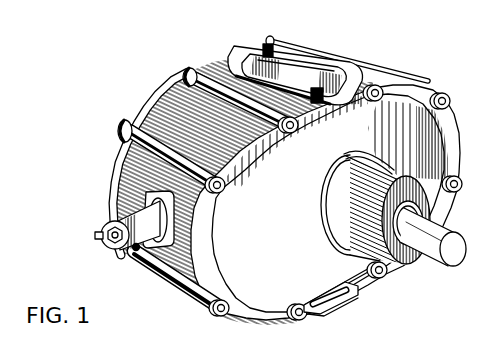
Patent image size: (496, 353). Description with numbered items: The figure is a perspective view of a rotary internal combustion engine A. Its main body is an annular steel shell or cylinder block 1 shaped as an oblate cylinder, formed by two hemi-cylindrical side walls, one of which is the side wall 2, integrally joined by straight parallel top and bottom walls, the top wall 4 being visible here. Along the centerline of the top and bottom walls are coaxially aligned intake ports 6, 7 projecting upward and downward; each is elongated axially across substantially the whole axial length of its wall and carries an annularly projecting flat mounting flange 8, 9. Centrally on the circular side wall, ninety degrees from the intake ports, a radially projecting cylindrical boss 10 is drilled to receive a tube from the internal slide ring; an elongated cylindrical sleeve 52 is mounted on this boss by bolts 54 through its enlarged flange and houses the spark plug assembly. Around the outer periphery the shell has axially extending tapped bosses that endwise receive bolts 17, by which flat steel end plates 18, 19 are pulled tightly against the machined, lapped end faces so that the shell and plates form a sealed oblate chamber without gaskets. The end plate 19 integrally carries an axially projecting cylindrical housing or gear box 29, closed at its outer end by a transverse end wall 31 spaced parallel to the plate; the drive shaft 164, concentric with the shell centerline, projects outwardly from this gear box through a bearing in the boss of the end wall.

The cylinder block 1 is at (383, 95).
The hemi-cylindrical side wall 2 is at (447, 93).
The top wall 4 is at (485, 218).
The intake port 6 is at (290, 75).
The intake port 7 is at (327, 298).
The mounting flange 8 is at (245, 50).
The mounting flange 9 is at (338, 302).
The cylindrical boss 10 is at (170, 242).
The bolt 17 is at (450, 174).
The end plate 18 is at (110, 168).
The end plate 19 is at (275, 243).
The gear box 29 is at (394, 248).
The end wall 31 is at (435, 205).
The sleeve 52 is at (126, 243).
The bolt 54 is at (118, 196).
The drive shaft 164 is at (445, 252).
The rotary internal combustion engine A is at (122, 112).